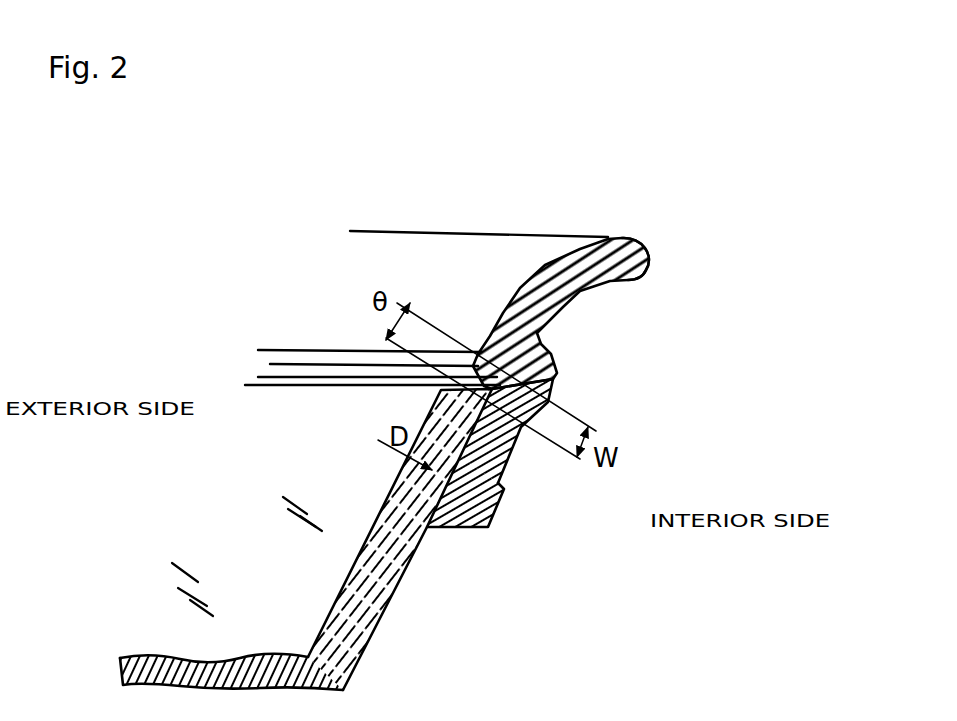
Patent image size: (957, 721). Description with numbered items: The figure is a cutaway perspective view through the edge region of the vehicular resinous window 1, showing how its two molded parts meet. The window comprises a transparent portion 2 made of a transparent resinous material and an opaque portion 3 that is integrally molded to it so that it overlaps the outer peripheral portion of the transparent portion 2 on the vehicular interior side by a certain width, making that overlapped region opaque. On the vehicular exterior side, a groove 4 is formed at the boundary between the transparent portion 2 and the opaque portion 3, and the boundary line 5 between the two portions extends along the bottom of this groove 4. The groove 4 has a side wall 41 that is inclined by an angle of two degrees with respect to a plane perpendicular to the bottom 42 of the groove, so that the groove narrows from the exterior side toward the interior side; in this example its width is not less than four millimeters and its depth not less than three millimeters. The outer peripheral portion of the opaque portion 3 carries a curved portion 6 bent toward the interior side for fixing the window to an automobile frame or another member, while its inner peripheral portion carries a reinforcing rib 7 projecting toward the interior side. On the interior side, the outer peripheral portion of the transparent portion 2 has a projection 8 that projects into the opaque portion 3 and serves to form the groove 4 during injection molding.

The vehicular resinous window 1 is at (606, 229).
The transparent portion 2 is at (362, 628).
The opaque portion 3 is at (563, 308).
The groove 4 is at (364, 331).
The side wall 41 is at (307, 350).
The bottom 42 is at (440, 375).
The boundary line 5 is at (327, 389).
The curved portion 6 is at (645, 258).
The reinforcing rib 7 is at (488, 521).
The projection 8 is at (527, 417).